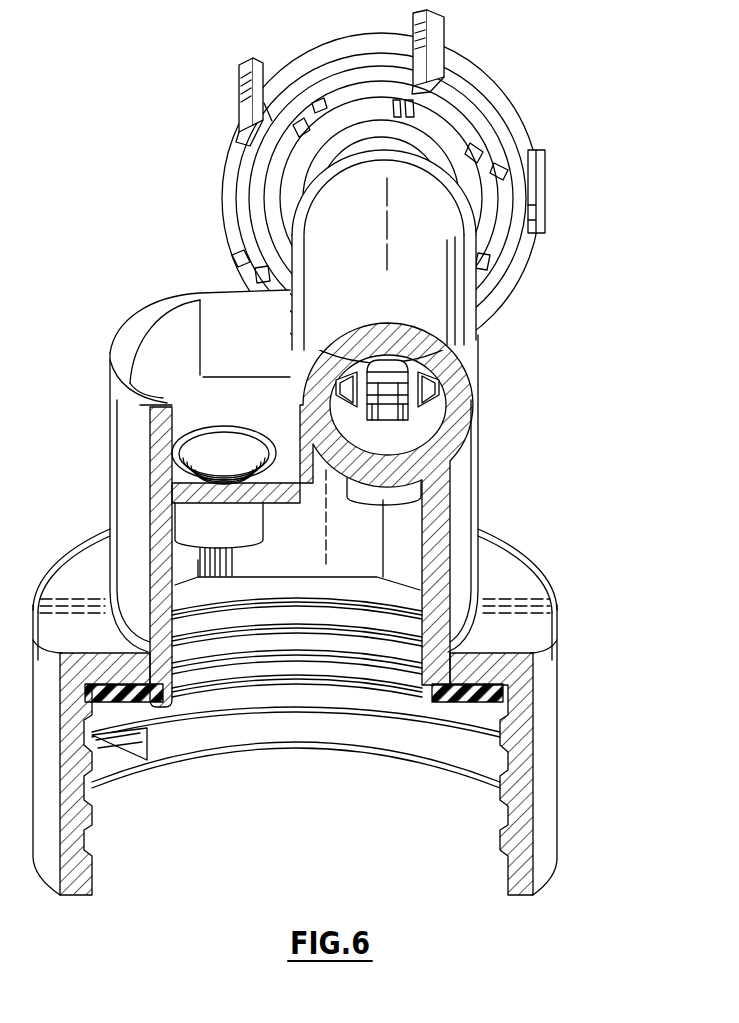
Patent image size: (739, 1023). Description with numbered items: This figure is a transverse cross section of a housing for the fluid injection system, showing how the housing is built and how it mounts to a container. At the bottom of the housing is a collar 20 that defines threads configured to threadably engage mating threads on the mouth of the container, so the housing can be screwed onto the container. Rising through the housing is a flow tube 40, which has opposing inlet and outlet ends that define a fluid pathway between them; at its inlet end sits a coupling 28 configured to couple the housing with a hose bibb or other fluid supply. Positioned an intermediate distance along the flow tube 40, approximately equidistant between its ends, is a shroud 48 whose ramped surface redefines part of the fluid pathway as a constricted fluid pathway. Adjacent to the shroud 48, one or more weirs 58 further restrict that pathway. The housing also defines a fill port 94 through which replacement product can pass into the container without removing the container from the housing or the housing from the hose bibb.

The collar 20 is at (553, 657).
The coupling 28 is at (502, 118).
The flow tube 40 is at (473, 333).
The shroud 48 is at (384, 367).
The weirs 58 is at (352, 372).
The fill port 94 is at (207, 443).